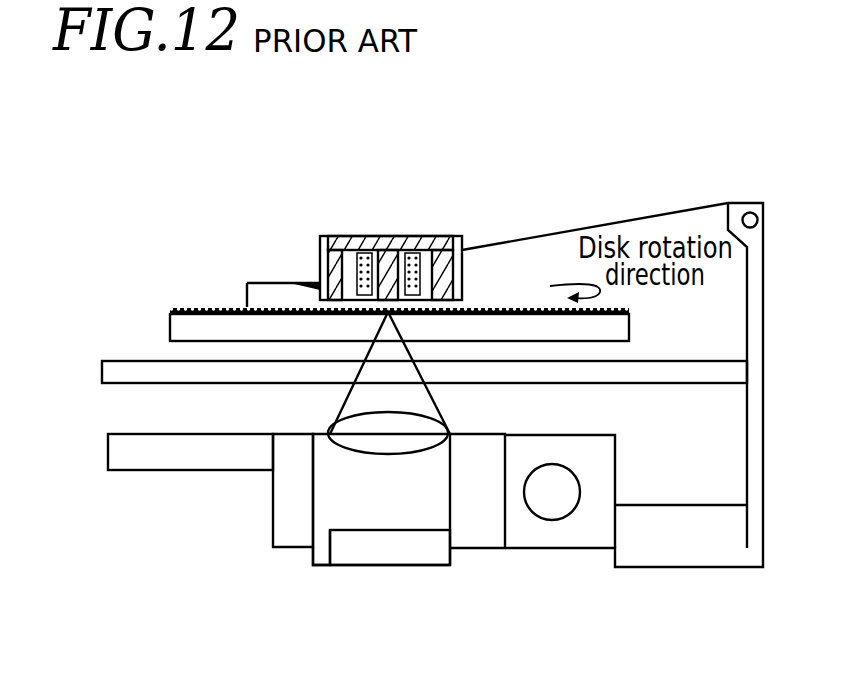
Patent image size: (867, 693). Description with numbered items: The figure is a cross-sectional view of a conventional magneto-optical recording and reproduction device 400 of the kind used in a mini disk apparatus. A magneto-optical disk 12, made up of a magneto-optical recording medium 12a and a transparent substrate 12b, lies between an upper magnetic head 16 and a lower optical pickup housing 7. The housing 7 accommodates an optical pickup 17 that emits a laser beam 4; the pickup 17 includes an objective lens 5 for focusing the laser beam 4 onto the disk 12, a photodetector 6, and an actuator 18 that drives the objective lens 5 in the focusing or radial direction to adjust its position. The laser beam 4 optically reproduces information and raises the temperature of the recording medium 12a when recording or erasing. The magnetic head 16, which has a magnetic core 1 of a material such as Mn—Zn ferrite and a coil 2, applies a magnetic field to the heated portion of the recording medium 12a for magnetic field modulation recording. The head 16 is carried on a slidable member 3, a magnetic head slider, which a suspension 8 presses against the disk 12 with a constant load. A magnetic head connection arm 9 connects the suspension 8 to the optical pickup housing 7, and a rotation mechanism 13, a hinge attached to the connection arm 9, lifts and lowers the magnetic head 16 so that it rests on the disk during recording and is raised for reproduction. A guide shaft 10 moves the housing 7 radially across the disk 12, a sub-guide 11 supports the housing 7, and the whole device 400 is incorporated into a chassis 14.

The magneto-optical recording and reproduction device 400 is at (703, 112).
The magnetic core 1 is at (390, 250).
The coil 2 is at (392, 143).
The slidable member 3 is at (247, 283).
The laser beam 4 is at (372, 400).
The objective lens 5 is at (413, 427).
The photodetector 6 is at (420, 557).
The optical pickup housing 7 is at (285, 522).
The suspension 8 is at (540, 236).
The magnetic head connection arm 9 is at (750, 350).
The guide shaft 10 is at (565, 497).
The sub-guide 11 is at (118, 452).
The magneto-optical disk 12 is at (318, 311).
The magneto-optical recording medium 12a is at (170, 308).
The transparent substrate 12b is at (185, 323).
The rotation mechanism 13 is at (756, 208).
The chassis 14 is at (112, 375).
The magnetic head 16 is at (381, 190).
The optical pickup 17 is at (318, 540).
The actuator 18 is at (490, 515).